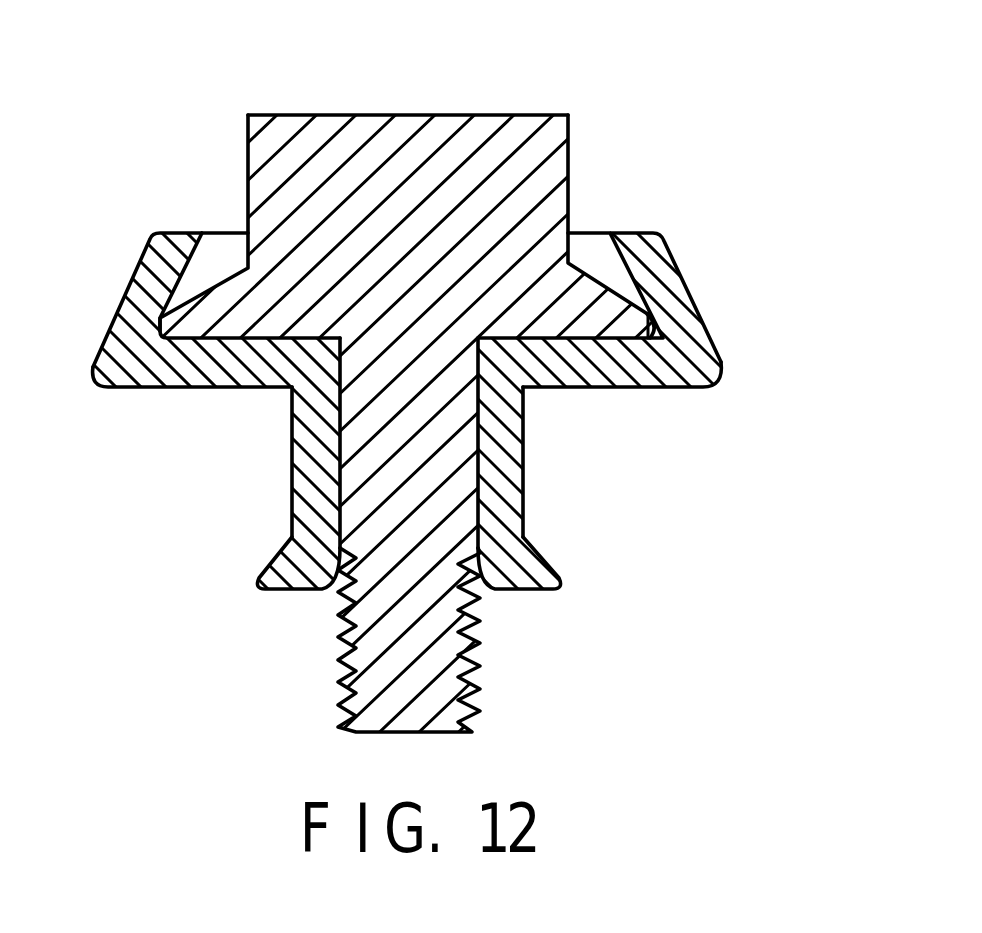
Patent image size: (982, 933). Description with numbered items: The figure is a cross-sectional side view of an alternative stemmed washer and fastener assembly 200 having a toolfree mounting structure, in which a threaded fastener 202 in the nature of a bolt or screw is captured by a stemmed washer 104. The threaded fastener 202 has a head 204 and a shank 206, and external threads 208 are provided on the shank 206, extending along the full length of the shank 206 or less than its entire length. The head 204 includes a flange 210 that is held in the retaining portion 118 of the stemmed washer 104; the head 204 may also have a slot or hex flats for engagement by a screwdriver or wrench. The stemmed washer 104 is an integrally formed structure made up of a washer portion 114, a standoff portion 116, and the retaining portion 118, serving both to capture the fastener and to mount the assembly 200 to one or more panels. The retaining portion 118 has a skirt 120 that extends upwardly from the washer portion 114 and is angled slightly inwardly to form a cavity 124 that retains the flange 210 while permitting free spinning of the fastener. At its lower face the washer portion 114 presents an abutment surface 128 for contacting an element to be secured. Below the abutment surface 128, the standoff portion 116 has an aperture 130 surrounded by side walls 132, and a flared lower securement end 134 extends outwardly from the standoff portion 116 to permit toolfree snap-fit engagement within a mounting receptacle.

The assembly 200 is at (491, 386).
The threaded fastener 202 is at (523, 113).
The head 204 is at (272, 145).
The shank 206 is at (450, 455).
The external threads 208 is at (480, 669).
The flange 210 is at (650, 325).
The stemmed washer 104 is at (491, 392).
The washer portion 114 is at (657, 390).
The abutment surface 128 is at (199, 387).
The retaining portion 118 is at (157, 266).
The skirt 120 is at (668, 250).
The cavity 124 is at (217, 253).
The standoff portion 116 is at (293, 458).
The aperture 130 is at (487, 508).
The side walls 132 is at (310, 490).
The lower securement end 134 is at (556, 590).